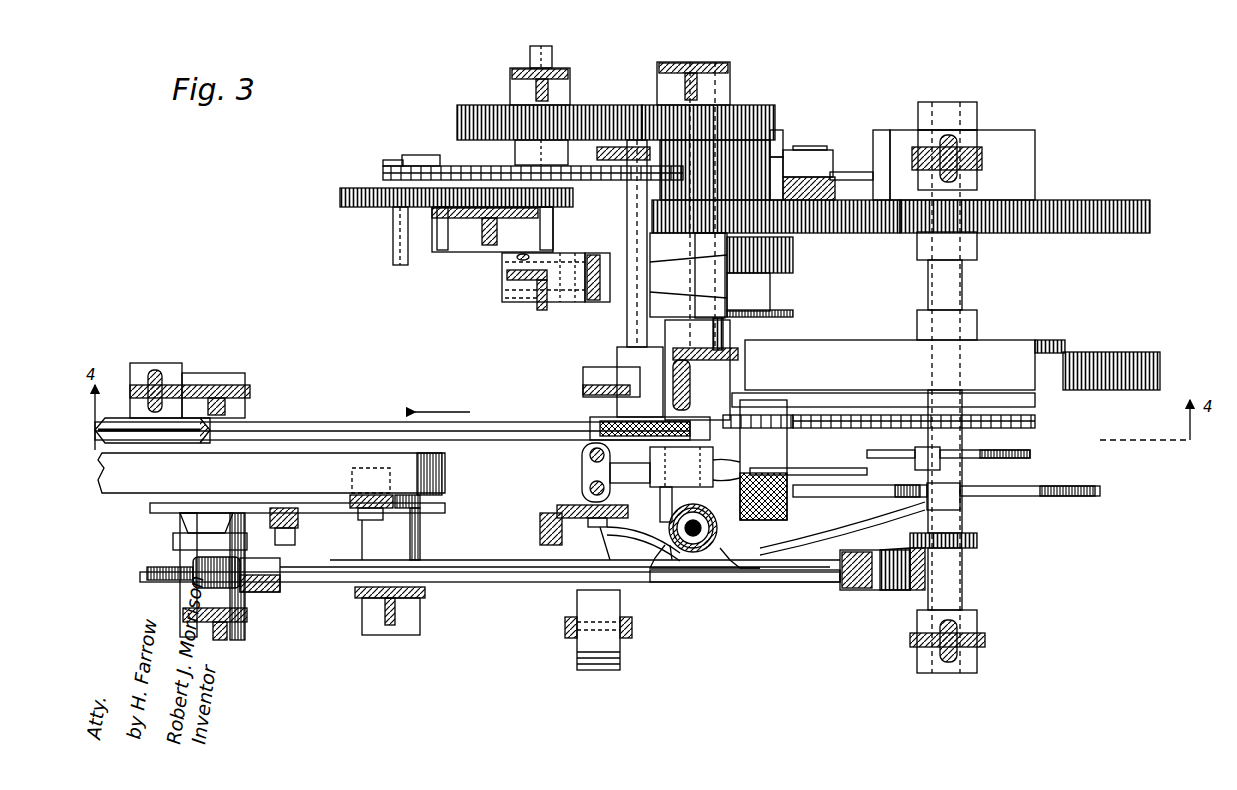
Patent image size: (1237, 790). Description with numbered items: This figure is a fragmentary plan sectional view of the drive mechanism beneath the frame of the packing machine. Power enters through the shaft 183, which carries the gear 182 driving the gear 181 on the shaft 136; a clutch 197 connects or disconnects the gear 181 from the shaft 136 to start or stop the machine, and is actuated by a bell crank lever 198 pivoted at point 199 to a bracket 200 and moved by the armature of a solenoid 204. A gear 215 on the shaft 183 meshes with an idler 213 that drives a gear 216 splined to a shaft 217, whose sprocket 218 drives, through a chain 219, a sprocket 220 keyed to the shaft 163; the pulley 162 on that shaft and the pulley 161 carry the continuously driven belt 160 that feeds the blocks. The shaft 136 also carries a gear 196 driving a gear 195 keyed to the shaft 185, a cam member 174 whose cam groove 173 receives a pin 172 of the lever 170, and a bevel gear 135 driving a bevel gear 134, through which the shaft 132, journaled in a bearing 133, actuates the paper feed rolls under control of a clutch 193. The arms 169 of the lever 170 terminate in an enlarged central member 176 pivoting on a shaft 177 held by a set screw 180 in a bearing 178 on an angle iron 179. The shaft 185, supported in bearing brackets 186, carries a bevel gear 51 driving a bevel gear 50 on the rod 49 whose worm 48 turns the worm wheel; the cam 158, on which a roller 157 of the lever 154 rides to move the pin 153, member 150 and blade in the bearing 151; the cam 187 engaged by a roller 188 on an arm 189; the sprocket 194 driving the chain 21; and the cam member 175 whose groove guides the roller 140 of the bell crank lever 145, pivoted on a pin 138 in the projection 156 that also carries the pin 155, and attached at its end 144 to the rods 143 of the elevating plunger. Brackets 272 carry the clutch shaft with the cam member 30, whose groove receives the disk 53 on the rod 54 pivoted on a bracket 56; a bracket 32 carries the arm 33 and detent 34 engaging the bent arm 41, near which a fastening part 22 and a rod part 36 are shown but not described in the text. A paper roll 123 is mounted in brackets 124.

The chain 21 is at (858, 410).
The bolt 22 is at (225, 640).
The cam member 30 is at (271, 473).
The bracket 32 is at (292, 528).
The arm 33 is at (150, 508).
The detent 34 is at (188, 521).
The threaded rod 36 is at (165, 567).
The bent arm 41 is at (215, 533).
The worm 48 is at (250, 592).
The rod 49 is at (445, 583).
The bevel gear 50 is at (905, 590).
The bevel gear 51 is at (977, 543).
The disk 53 is at (373, 468).
The rod 54 is at (420, 500).
The bracket 56 is at (362, 610).
The removable roll 123 is at (577, 650).
The brackets 124 is at (565, 628).
The shaft 132 is at (693, 535).
The bearing 133 is at (700, 548).
The bevel gear 134 is at (712, 540).
The bevel gear 135 is at (707, 545).
The shaft 136 is at (723, 331).
The pin 138 is at (766, 400).
The roller 140 is at (808, 402).
The rods 143 is at (590, 455).
The end of bell crank lever 144 is at (585, 472).
The bell crank lever 145 is at (667, 487).
The member 150 is at (600, 523).
The bearing 151 is at (557, 509).
The pin 153 is at (598, 527).
The lever 154 is at (688, 548).
The pin 155 is at (775, 583).
The projection 156 is at (803, 498).
The roller 157 is at (960, 500).
The cam 158 is at (1100, 491).
The belt 160 is at (305, 422).
The pulley 161 is at (112, 418).
The pulley 162 is at (595, 420).
The shaft 163 is at (632, 330).
The arm 169 is at (593, 300).
The lever 170 is at (627, 250).
The pin 172 is at (652, 285).
The cam groove 173 is at (775, 292).
The cam member 174 is at (793, 255).
The cam member 175 is at (1165, 360).
The enlarged central member 176 is at (552, 305).
The shaft 177 is at (505, 308).
The bearing 178 is at (507, 287).
The angle iron 179 is at (507, 275).
The set screw 180 is at (515, 257).
The gear 181 is at (742, 105).
The gear 182 is at (576, 105).
The shaft 183 is at (548, 52).
The shaft 185 is at (962, 274).
The bearing brackets 186 is at (962, 150).
The cam 187 is at (1030, 454).
The roller 188 is at (916, 452).
The arm 189 is at (822, 468).
The clutch 193 is at (636, 544).
The sprocket 194 is at (1035, 422).
The gear 195 is at (1108, 205).
The gear 196 is at (722, 215).
The clutch 197 is at (777, 130).
The bell crank lever 198 is at (783, 158).
The pivot point 199 is at (808, 150).
The bracket 200 is at (838, 172).
The solenoid 204 is at (1035, 145).
The idler 213 is at (505, 172).
The gear 215 is at (585, 218).
The gear 216 is at (340, 196).
The shaft 217 is at (396, 262).
The sprocket 218 is at (383, 165).
The chain 219 is at (440, 166).
The sprocket 220 is at (700, 162).
The brackets 272 is at (247, 380).